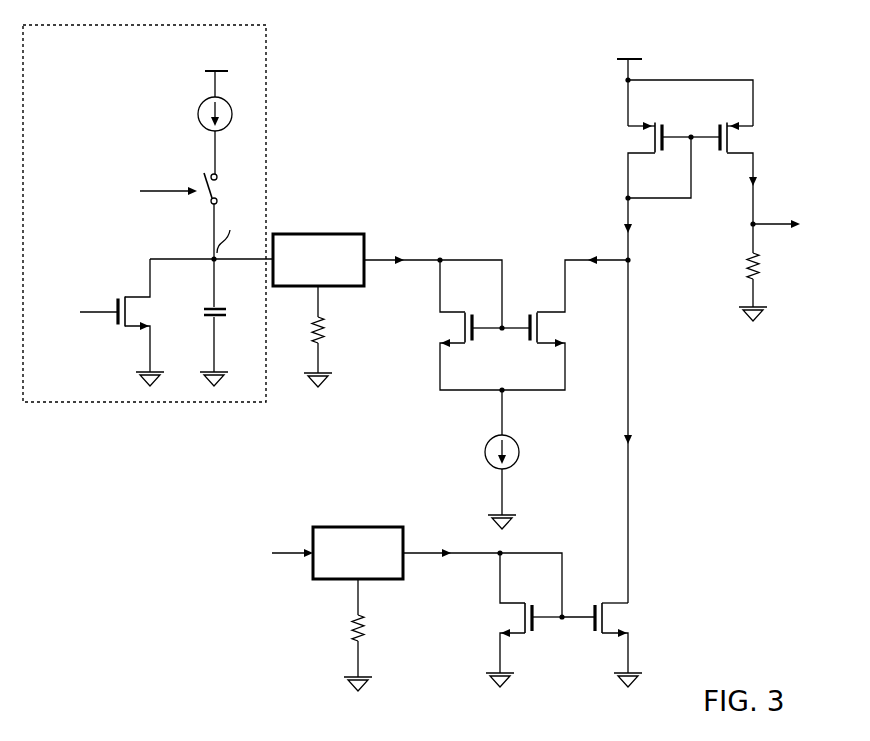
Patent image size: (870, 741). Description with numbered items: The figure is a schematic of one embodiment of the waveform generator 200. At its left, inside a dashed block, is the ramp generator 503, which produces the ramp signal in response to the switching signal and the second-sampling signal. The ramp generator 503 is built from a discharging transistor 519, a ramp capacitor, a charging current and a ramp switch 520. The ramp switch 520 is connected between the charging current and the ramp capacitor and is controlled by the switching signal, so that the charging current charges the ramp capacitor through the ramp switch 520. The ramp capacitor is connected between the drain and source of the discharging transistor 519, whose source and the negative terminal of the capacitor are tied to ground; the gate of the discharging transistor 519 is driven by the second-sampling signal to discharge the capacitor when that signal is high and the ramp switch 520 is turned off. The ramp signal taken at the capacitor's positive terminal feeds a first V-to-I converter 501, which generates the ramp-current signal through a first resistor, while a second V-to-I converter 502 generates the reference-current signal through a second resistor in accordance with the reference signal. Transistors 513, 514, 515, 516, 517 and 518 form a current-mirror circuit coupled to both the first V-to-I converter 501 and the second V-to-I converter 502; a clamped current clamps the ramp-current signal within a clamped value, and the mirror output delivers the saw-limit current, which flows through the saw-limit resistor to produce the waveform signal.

The waveform generator 200 is at (826, 62).
The first V-to-I converter 501 is at (318, 247).
The second V-to-I converter 502 is at (358, 540).
The ramp generator 503 is at (266, 402).
The transistor 513 is at (451, 325).
The transistor 514 is at (565, 323).
The transistor 515 is at (513, 620).
The transistor 516 is at (617, 645).
The transistor 517 is at (642, 191).
The transistor 518 is at (742, 187).
The discharging transistor 519 is at (135, 322).
The ramp switch 520 is at (234, 216).